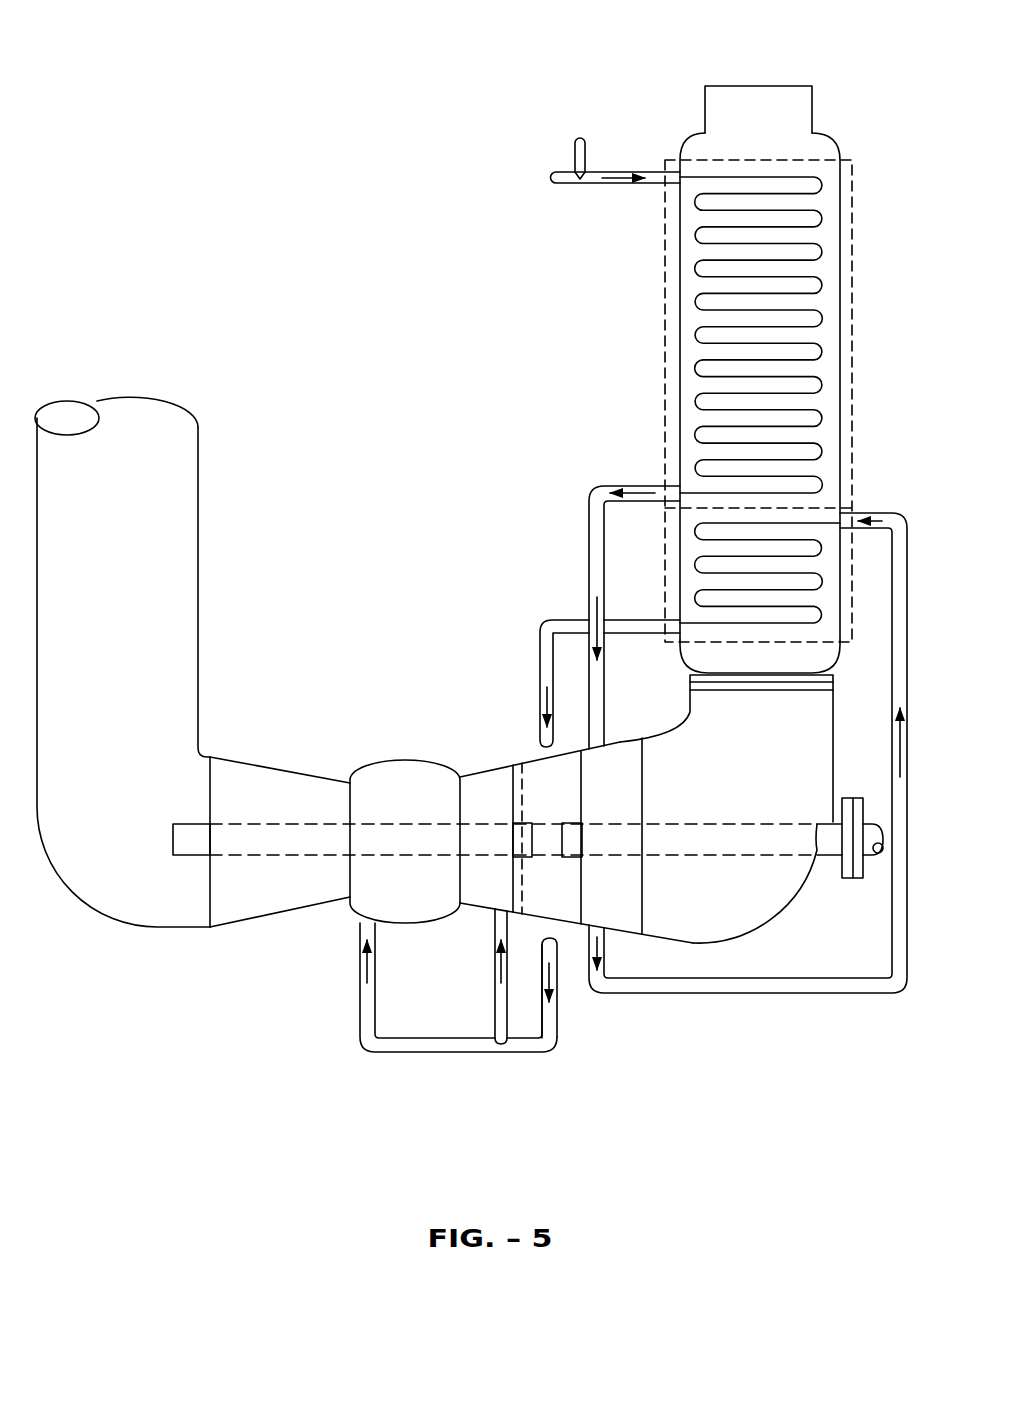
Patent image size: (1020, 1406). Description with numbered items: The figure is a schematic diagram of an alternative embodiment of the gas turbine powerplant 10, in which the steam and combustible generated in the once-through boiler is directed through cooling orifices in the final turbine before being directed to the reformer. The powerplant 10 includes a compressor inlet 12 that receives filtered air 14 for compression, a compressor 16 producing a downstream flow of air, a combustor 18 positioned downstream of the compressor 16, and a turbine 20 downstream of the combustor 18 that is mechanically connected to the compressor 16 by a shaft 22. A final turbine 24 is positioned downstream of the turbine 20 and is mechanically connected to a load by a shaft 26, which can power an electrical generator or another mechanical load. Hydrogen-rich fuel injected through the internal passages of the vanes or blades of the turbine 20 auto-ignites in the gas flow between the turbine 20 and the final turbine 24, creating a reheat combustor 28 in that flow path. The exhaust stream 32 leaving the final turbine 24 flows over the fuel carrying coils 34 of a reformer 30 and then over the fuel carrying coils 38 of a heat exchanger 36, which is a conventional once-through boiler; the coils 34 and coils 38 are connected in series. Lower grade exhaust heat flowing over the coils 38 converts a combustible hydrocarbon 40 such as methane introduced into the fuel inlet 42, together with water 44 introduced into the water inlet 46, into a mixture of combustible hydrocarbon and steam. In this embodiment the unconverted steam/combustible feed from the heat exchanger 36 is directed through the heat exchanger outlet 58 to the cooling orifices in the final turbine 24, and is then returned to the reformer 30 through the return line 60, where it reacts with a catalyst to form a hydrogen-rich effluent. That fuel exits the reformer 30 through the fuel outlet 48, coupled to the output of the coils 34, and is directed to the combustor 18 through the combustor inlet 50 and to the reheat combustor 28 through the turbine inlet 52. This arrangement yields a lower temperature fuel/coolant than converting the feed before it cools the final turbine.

The gas turbine powerplant 10 is at (220, 146).
The compressor inlet 12 is at (198, 533).
The filtered air 14 is at (113, 380).
The compressor 16 is at (260, 763).
The combustor 18 is at (408, 758).
The turbine 20 is at (480, 770).
The shaft 22 is at (200, 826).
The final turbine 24 is at (618, 740).
The shaft 26 is at (873, 858).
The reheat combustor 28 is at (519, 757).
The reformer 30 is at (667, 593).
The exhaust stream 32 is at (755, 78).
The fuel carrying coils 34 is at (823, 615).
The heat exchanger 36 is at (852, 353).
The fuel carrying coils 38 is at (822, 252).
The combustible hydrocarbon 40 is at (537, 180).
The fuel inlet 42 is at (572, 184).
The water 44 is at (578, 128).
The water inlet 46 is at (585, 153).
The fuel outlet 48 is at (540, 643).
The combustor inlet 50 is at (360, 1005).
The turbine inlet 52 is at (495, 990).
The heat exchanger outlet 58 is at (589, 560).
The return line 60 is at (810, 992).